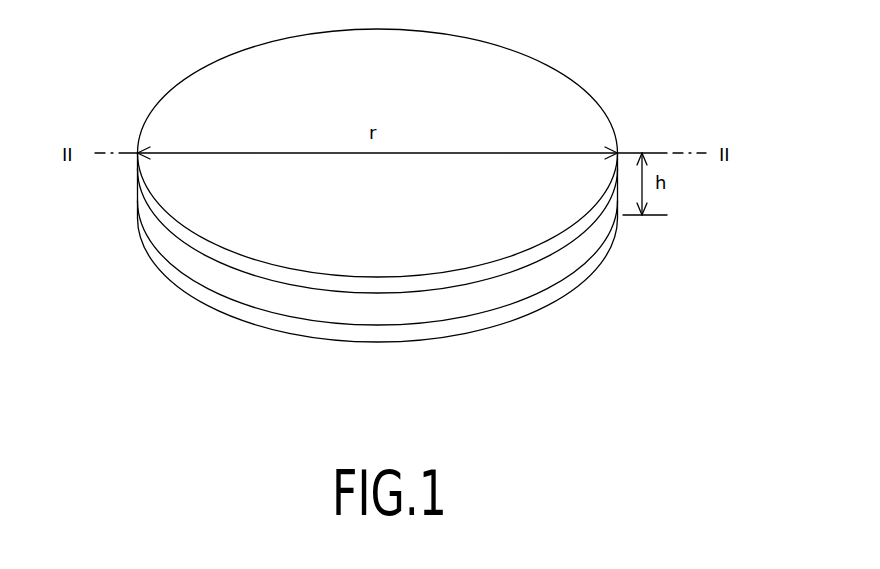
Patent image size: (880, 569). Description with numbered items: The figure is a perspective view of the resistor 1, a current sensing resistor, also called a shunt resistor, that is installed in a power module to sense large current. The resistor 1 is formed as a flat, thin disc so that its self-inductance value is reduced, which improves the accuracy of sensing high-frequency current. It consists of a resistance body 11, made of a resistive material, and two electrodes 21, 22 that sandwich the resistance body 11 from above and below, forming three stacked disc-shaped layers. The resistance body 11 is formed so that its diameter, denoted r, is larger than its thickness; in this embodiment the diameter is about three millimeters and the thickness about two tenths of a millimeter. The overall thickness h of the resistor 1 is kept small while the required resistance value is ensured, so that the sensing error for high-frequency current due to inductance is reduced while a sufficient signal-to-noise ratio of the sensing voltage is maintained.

The resistor 1 is at (397, 193).
The resistance body 11 is at (548, 272).
The electrode 21 is at (252, 266).
The electrode 22 is at (273, 320).